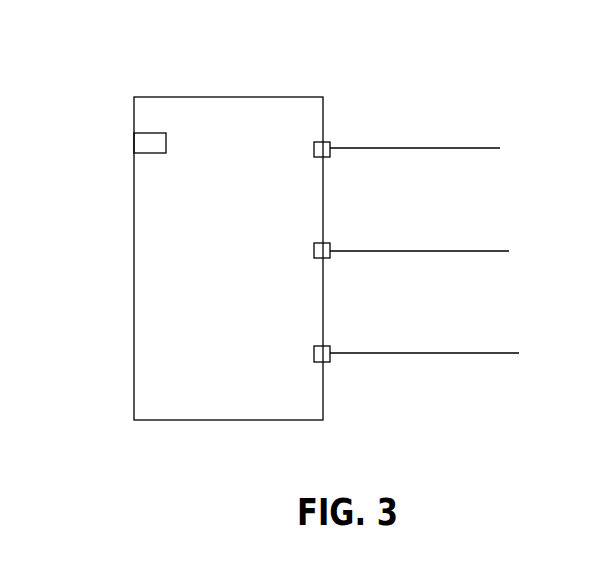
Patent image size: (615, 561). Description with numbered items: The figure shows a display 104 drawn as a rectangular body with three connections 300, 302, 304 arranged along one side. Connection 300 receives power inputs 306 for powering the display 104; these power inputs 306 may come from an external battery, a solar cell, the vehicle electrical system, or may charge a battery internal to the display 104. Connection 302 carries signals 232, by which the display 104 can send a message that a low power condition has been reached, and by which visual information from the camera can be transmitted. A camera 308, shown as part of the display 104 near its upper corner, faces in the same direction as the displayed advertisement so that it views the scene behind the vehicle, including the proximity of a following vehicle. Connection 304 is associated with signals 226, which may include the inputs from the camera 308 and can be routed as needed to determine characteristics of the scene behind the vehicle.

The display 104 is at (200, 97).
The camera 308 is at (155, 133).
The connection 300 is at (328, 142).
The connection 302 is at (328, 243).
The connection 304 is at (327, 346).
The power inputs 306 is at (483, 148).
The signals 232 is at (488, 251).
The signals 226 is at (493, 353).